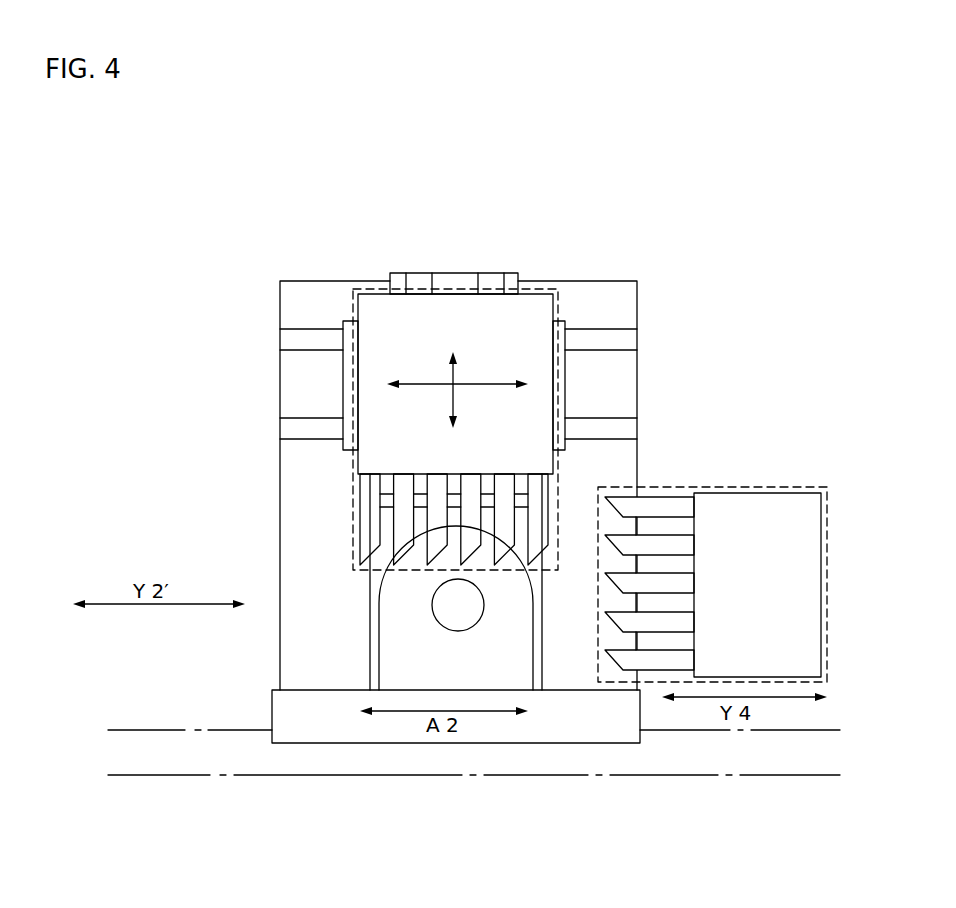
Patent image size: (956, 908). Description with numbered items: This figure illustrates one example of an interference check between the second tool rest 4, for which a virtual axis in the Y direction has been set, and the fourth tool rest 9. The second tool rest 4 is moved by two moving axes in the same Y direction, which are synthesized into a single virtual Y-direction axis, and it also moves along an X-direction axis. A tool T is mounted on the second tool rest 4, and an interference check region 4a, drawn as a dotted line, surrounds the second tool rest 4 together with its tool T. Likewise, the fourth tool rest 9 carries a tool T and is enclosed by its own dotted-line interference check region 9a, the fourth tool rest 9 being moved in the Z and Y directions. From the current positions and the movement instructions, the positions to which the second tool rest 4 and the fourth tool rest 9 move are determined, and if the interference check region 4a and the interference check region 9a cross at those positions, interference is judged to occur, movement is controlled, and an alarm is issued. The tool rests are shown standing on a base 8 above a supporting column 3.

The workpiece support column 3 is at (418, 614).
The second tool rest 4 is at (366, 286).
The interference check region 4a is at (535, 290).
The bed 8 is at (308, 752).
The fourth tool rest 9 is at (805, 480).
The interference check region 9a is at (738, 487).
The tool T is at (367, 530).